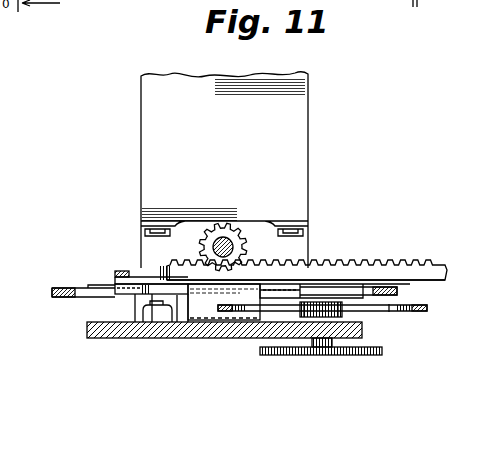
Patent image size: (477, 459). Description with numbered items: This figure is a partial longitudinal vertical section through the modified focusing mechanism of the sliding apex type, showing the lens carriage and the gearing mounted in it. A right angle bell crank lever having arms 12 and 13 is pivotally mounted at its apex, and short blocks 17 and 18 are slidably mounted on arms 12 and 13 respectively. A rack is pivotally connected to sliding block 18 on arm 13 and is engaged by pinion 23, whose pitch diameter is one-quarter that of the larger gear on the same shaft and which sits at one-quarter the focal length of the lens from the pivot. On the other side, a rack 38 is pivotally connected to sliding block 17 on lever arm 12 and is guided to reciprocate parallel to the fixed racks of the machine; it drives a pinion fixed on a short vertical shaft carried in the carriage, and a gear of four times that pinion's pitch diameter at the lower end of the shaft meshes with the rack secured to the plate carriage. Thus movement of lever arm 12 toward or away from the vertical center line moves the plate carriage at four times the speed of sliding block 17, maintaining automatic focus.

The pinion 23 is at (237, 232).
The short block 17 is at (328, 294).
The arm 12 is at (360, 290).
The arm 13 is at (184, 322).
The short block 18 is at (118, 295).
The rack 38 is at (390, 311).